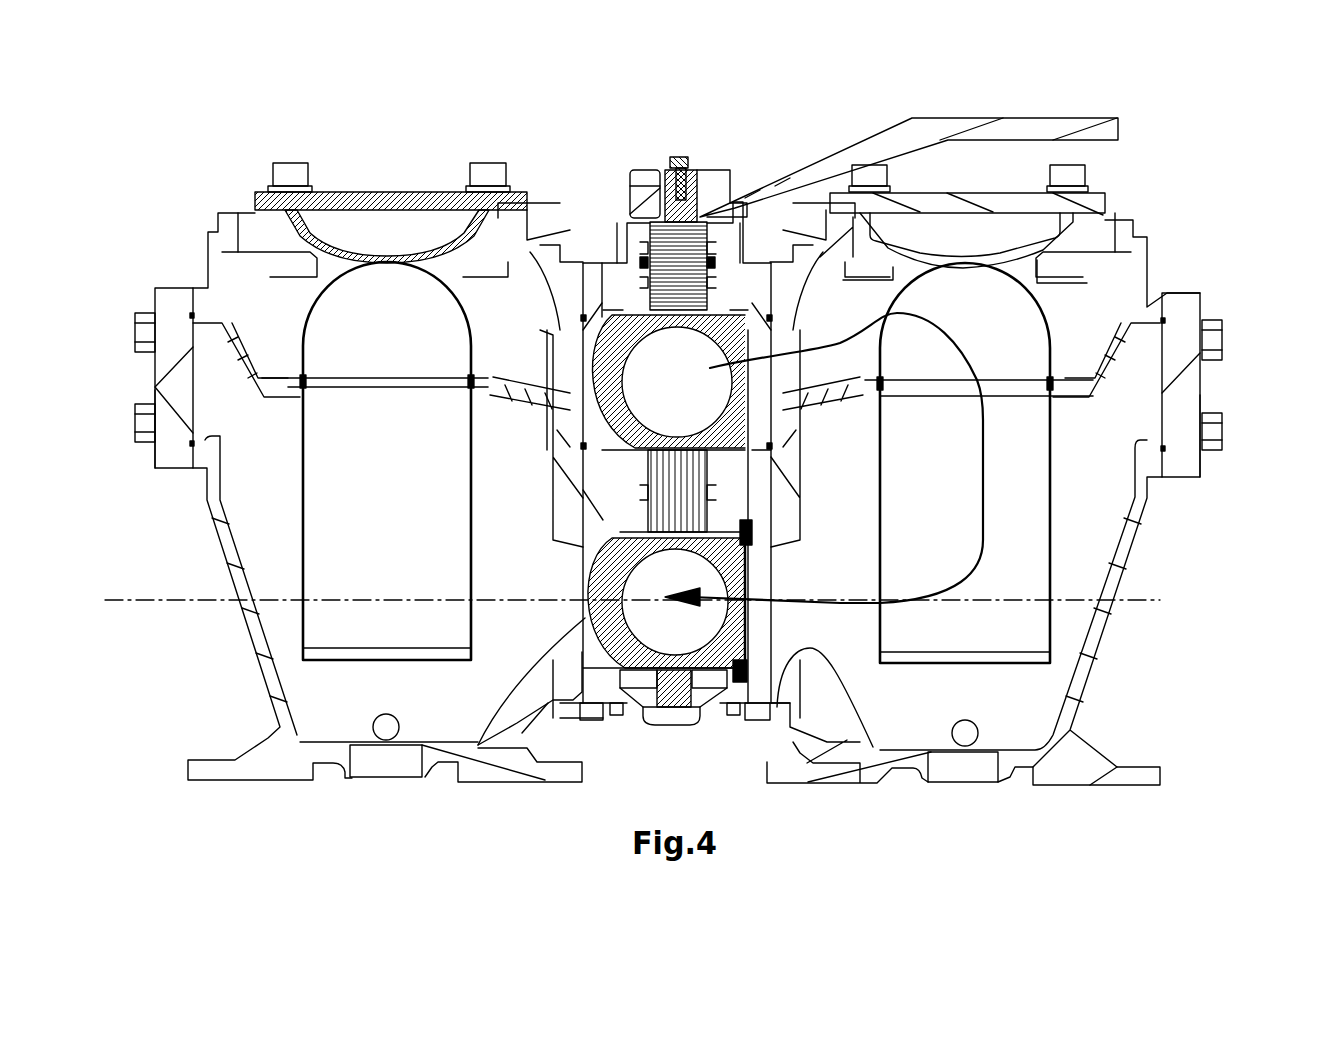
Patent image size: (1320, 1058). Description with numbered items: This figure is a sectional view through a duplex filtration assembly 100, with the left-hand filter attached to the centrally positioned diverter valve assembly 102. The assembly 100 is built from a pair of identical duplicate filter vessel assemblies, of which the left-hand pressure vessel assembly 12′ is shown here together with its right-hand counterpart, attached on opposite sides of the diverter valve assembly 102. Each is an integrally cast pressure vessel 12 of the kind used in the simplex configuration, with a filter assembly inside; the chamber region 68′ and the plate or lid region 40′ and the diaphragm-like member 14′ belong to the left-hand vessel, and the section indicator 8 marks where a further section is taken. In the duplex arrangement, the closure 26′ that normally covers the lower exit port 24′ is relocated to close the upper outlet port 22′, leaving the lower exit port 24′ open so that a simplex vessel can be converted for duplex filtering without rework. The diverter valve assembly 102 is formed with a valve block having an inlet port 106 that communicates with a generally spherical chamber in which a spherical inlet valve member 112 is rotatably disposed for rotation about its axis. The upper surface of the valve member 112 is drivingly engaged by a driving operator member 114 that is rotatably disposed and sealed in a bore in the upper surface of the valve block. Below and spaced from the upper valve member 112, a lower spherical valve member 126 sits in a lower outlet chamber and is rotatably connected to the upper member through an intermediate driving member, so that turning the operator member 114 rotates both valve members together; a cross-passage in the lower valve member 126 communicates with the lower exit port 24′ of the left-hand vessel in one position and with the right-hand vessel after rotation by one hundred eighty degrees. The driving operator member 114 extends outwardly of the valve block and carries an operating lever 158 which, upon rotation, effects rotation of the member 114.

The section line 8- 8 is at (1193, 588).
The pressure vessel 12 is at (692, 591).
The left-hand pressure vessel assembly 12′ is at (258, 684).
The first diaphragm 14′ is at (547, 330).
The outlet port 22′ is at (200, 435).
The lower exit port 24′ is at (575, 655).
The closure 26′ is at (180, 288).
The first diaphragm plate 40′ is at (338, 252).
The first pumping chamber 68′ is at (296, 572).
The duplex filtration assembly 100 is at (693, 130).
The diverter valve assembly 102 is at (562, 196).
The inlet port 106 is at (622, 645).
The spherical inlet valve member 112 is at (612, 312).
The driving operator member 114 is at (678, 245).
The lower spherical valve member 126 is at (423, 748).
The operating lever 158 is at (910, 122).